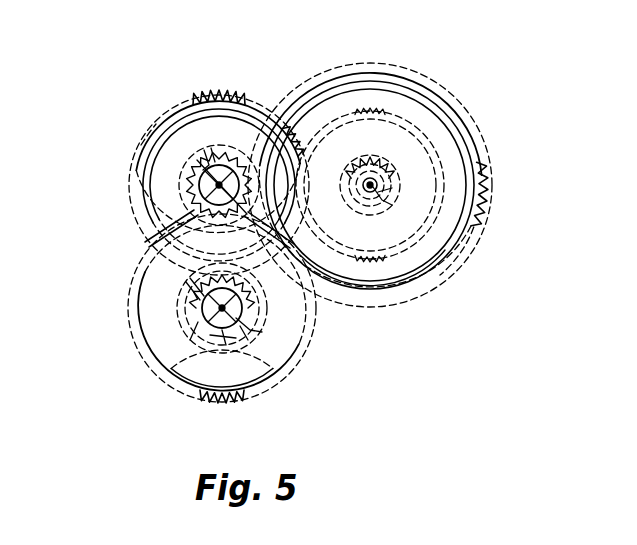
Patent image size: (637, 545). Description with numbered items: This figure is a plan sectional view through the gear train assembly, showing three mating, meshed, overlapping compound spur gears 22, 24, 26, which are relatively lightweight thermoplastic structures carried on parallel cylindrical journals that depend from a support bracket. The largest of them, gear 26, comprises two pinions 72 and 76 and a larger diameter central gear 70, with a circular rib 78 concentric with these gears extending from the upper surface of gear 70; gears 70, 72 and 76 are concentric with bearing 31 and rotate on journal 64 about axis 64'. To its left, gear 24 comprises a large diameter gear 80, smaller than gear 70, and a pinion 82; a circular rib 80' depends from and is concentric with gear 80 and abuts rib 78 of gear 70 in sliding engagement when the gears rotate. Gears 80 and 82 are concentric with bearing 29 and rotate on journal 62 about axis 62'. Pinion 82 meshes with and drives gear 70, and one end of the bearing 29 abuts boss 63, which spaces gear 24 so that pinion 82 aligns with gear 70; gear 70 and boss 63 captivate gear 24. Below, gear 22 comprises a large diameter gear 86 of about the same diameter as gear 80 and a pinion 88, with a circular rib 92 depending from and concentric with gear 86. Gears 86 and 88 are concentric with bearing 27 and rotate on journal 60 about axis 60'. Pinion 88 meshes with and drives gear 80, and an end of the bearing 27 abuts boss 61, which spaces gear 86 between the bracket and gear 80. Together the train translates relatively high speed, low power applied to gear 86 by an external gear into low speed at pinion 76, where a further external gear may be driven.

The gear 22 is at (141, 274).
The gear 24 is at (172, 113).
The gear 26 is at (486, 174).
The gear bearing 27 is at (258, 306).
The gear bearing 29 is at (196, 191).
The gear bearing 31 is at (390, 181).
The gear journal 60 is at (186, 325).
The axis 60' is at (231, 353).
The gear spacing boss 61 is at (251, 326).
The gear journal 62 is at (219, 170).
The axis 62' is at (193, 153).
The gear spacing boss 63 is at (223, 219).
The gear journal 64 is at (396, 208).
The axis 64' is at (370, 185).
The central gear 70 is at (448, 287).
The pinion 72 is at (470, 233).
The pinion 76 is at (376, 167).
The circular rib 78 is at (384, 86).
The large diameter gear 80 is at (219, 71).
The circular rib 80' is at (282, 107).
The pinion 82 is at (143, 178).
The large diameter gear 86 is at (226, 401).
The pinion 88 is at (186, 306).
The circular rib 92 is at (150, 354).